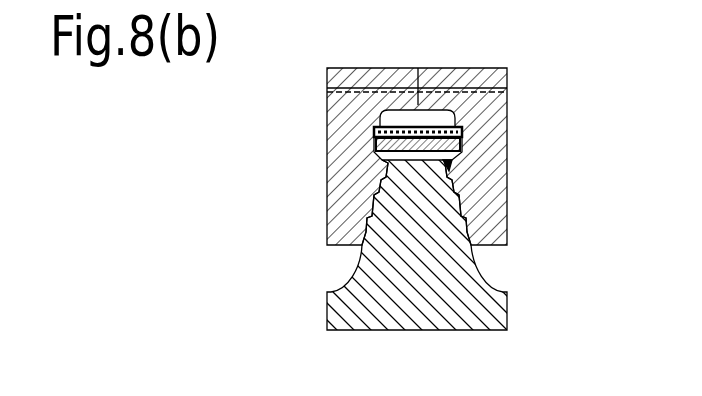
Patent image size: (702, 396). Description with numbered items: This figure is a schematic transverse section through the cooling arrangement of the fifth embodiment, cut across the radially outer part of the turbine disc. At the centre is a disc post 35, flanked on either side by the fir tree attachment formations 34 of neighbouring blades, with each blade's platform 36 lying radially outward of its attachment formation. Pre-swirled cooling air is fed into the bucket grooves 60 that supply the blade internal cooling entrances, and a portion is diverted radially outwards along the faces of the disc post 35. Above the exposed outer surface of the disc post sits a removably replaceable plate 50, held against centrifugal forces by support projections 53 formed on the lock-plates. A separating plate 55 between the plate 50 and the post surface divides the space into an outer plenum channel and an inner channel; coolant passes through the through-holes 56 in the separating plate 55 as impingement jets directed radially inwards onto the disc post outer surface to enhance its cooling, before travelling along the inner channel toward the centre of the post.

The fir tree attachment formations 34 is at (350, 195).
The disc post 35 is at (431, 229).
The platform 36 is at (422, 74).
The removably replaceable plate 50 is at (441, 118).
The support projections 53 is at (378, 126).
The separating plate 55 is at (376, 148).
The through-holes 56 is at (457, 168).
The bucket grooves 60 is at (340, 265).